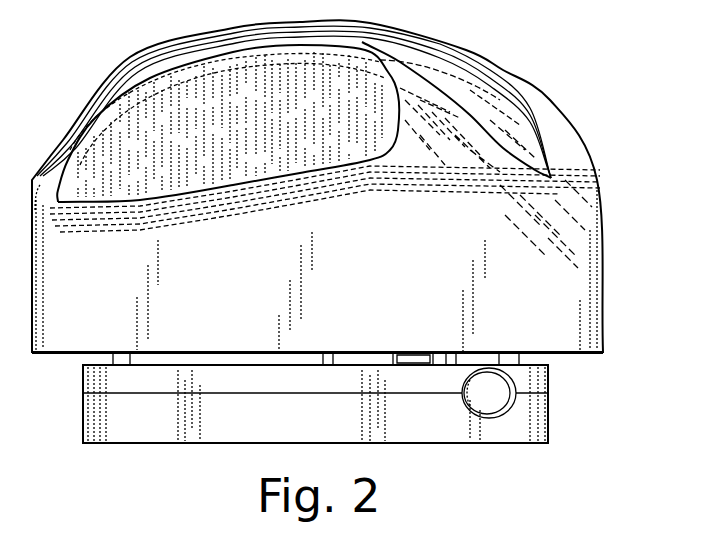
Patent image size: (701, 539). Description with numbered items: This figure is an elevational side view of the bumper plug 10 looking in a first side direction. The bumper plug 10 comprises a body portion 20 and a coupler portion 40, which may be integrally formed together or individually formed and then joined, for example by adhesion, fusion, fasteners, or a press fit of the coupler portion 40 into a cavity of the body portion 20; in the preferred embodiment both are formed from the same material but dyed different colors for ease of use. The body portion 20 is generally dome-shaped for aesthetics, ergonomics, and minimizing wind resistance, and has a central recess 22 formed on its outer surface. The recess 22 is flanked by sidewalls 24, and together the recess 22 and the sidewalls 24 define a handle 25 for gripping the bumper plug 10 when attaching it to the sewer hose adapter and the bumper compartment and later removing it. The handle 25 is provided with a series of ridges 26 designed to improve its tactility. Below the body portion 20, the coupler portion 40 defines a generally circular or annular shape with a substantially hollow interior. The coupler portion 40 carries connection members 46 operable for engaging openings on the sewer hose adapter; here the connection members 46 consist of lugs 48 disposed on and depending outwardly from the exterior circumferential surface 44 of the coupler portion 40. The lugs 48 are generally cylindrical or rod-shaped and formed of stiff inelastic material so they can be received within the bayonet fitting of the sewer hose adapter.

The bumper plug 10 is at (50, 63).
The body portion 20 is at (606, 302).
The recess 22 is at (505, 105).
The sidewalls 24 is at (562, 131).
The handle 25 is at (496, 70).
The ridges 26 is at (183, 80).
The coupler portion 40 is at (80, 412).
The exterior circumferential surface 44 is at (435, 438).
The connection members 46 is at (516, 382).
The lugs 48 is at (511, 398).